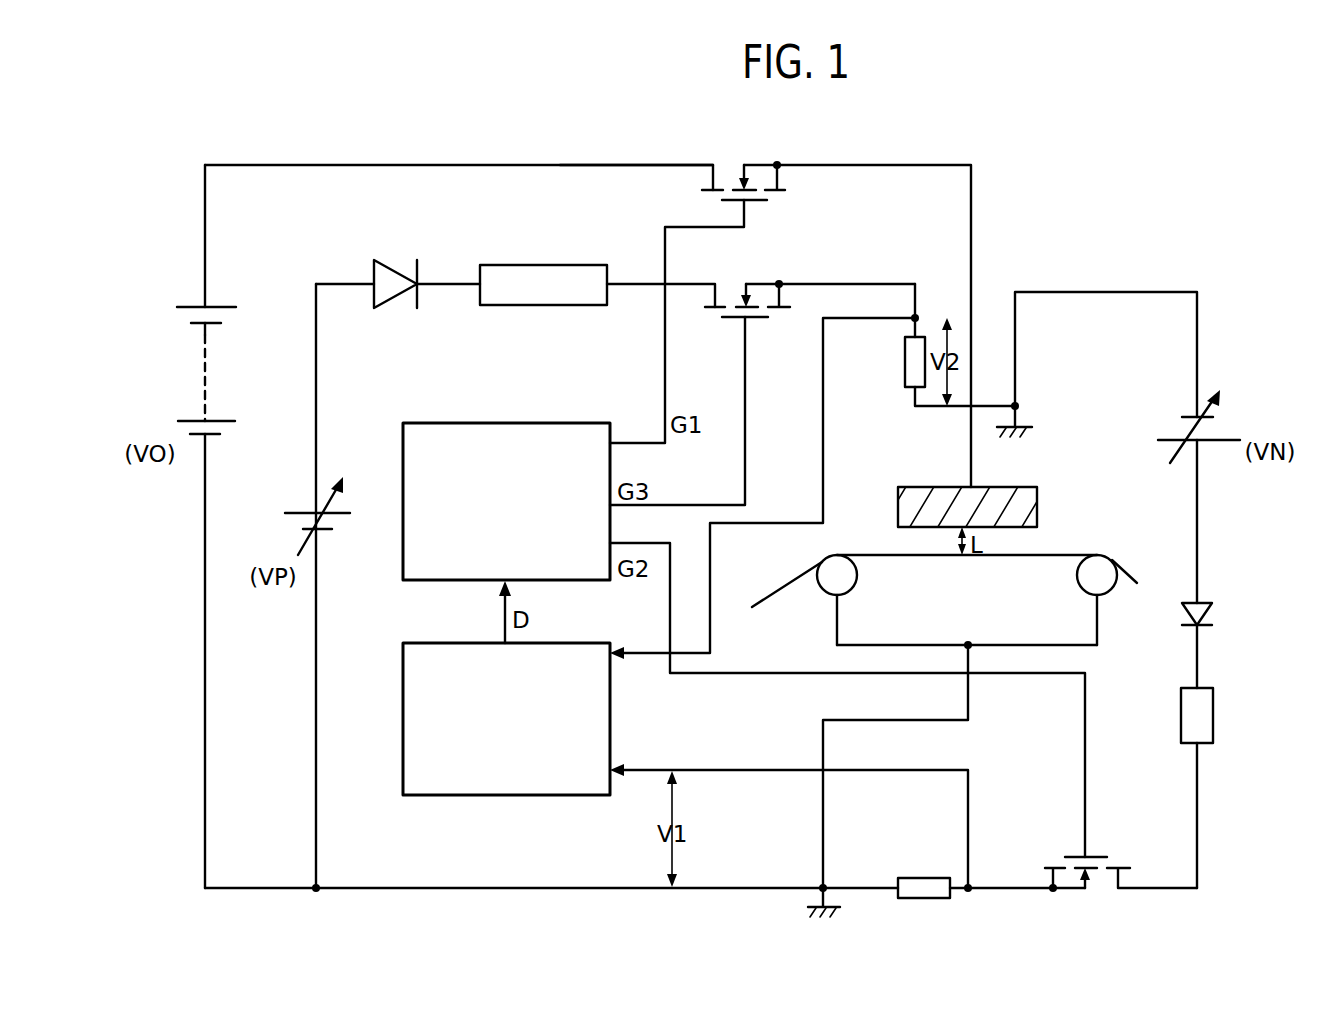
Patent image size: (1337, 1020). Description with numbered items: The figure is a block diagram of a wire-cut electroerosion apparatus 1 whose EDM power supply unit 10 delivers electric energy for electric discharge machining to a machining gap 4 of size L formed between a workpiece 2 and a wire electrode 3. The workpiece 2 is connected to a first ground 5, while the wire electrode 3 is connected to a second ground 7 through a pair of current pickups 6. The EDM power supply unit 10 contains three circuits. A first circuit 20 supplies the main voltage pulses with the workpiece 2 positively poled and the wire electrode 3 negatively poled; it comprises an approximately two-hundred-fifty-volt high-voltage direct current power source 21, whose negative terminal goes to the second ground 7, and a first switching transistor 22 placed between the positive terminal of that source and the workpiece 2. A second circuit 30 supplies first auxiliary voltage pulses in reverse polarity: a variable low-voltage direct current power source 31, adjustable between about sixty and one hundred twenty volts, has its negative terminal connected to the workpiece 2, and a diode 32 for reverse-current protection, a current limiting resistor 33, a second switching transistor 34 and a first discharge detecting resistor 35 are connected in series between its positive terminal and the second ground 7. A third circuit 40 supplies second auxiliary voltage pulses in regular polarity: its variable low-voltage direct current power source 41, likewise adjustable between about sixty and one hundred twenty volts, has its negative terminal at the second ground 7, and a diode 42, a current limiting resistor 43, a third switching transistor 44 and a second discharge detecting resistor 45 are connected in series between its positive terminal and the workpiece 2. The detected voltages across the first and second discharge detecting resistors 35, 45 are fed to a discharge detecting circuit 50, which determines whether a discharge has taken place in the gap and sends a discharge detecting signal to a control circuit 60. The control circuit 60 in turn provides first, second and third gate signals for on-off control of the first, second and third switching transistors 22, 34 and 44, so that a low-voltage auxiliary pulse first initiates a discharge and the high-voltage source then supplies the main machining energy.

The wire-cut electroerosion apparatus 1 is at (1068, 207).
The workpiece 2 is at (1015, 486).
The wire electrode 3 is at (1077, 557).
The machining gap 4 is at (1015, 545).
The first ground 5 is at (1025, 428).
The current pickups 6 is at (828, 583).
The second ground 7 is at (810, 906).
The EDM power supply unit 10 is at (460, 165).
The first circuit 20 is at (610, 165).
The high-voltage direct current power source 21 is at (205, 370).
The first switching transistor 22 is at (743, 170).
The second circuit 30 is at (1197, 820).
The variable low-voltage direct current power source 31 is at (1220, 427).
The diode 32 is at (1200, 602).
The current limiting resistor 33 is at (1202, 717).
The second switching transistor 34 is at (1110, 857).
The first discharge detecting resistor 35 is at (917, 884).
The third circuit 40 is at (337, 283).
The variable low-voltage direct current power source 41 is at (337, 520).
The diode 42 is at (392, 306).
The current limiting resistor 43 is at (538, 305).
The third switching transistor 44 is at (727, 317).
The second discharge detecting resistor 45 is at (905, 365).
The discharge detecting circuit 50 is at (511, 797).
The control circuit 60 is at (505, 423).